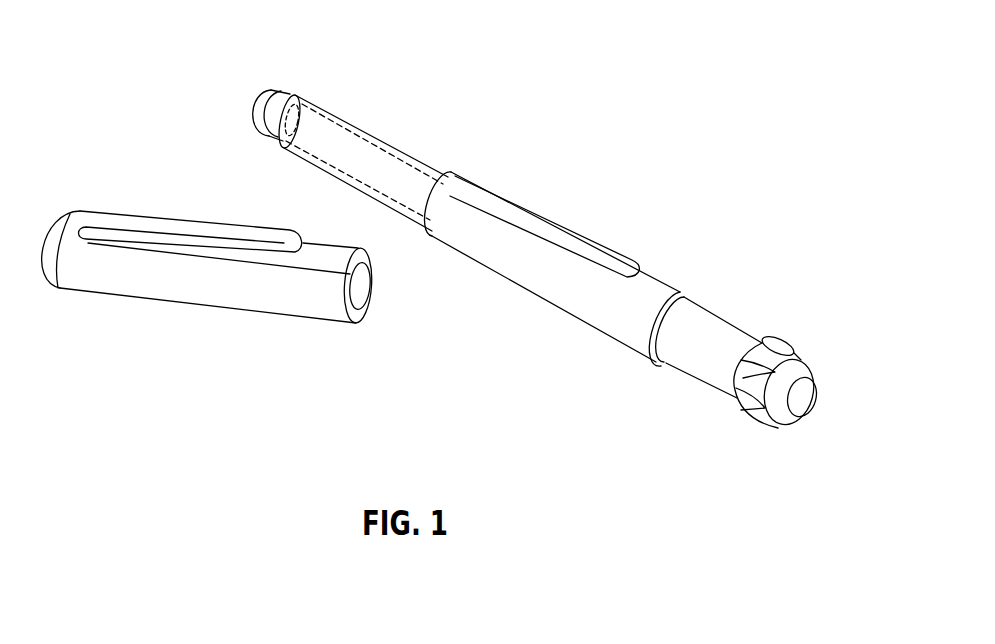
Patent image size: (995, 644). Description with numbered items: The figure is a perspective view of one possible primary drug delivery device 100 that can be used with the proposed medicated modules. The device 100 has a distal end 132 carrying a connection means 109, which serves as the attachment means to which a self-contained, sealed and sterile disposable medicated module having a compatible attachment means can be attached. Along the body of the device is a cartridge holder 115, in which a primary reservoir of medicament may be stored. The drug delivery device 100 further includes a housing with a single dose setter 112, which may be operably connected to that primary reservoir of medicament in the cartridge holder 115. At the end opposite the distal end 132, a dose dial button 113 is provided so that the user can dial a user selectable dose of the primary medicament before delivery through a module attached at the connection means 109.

The drug delivery device 100 is at (535, 210).
The connection means 109 is at (270, 88).
The single dose setter 112 is at (722, 322).
The dose dial button 113 is at (795, 352).
The cartridge holder 115 is at (367, 130).
The distal end 132 is at (205, 147).